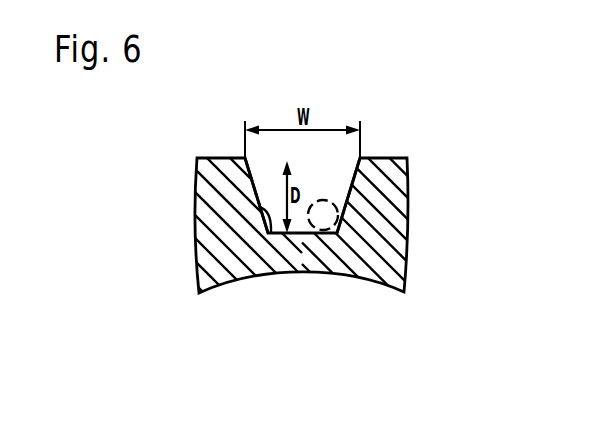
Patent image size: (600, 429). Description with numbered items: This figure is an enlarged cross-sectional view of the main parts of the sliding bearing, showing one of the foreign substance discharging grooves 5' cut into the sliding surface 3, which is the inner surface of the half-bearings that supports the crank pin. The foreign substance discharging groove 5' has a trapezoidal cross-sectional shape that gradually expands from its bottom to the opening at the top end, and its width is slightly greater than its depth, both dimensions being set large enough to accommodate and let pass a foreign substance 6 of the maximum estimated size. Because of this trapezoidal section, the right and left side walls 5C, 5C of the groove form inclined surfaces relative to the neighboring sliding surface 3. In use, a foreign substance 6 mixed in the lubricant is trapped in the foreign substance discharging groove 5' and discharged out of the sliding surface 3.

The sliding surface 3 is at (403, 154).
The side wall 5C is at (257, 184).
The foreign substance discharging groove 5' is at (278, 272).
The foreign substance 6 is at (328, 233).